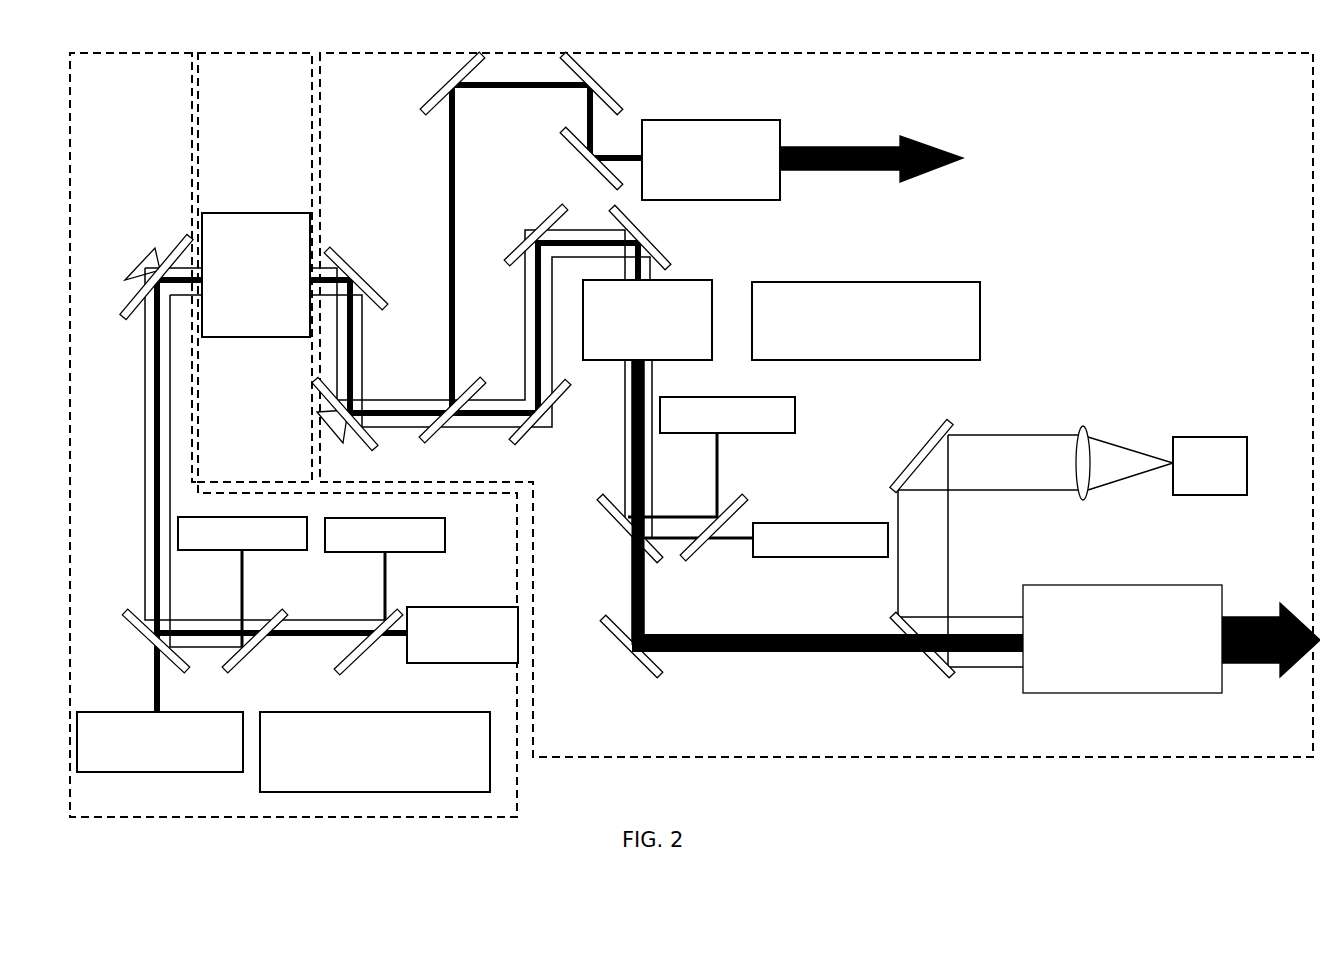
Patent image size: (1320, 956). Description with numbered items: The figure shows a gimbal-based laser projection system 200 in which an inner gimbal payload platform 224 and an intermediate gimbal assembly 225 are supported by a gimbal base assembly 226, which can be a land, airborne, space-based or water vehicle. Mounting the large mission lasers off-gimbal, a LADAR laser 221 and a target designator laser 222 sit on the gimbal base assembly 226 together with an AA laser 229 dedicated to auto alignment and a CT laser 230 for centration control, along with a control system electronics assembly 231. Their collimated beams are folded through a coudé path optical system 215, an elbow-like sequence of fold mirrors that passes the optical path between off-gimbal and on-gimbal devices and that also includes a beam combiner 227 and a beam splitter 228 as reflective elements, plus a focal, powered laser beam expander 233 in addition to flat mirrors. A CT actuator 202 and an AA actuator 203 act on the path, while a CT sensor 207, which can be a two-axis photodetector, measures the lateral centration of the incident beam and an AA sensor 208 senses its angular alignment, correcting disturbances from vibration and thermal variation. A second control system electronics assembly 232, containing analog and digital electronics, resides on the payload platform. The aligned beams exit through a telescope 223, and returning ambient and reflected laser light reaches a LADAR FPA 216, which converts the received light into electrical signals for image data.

The gimbal-based laser projection system 200 is at (868, 822).
The CT actuator 202 is at (141, 260).
The AA actuator 203 is at (338, 440).
The CT sensor 207 is at (828, 523).
The AA sensor 208 is at (762, 434).
The coudé path optical system 215 is at (250, 213).
The LADAR FPA 216 is at (1213, 437).
The LADAR laser 221 is at (427, 607).
The target designator laser 222 is at (128, 772).
The telescope 223 is at (1113, 694).
The inner gimbal payload platform 224 is at (345, 53).
The intermediate gimbal assembly 225 is at (210, 53).
The gimbal base assembly 226 is at (112, 53).
The beam combiner 227 is at (135, 628).
The beam splitter 228 is at (482, 383).
The AA laser 229 is at (253, 552).
The CT laser 230 is at (447, 545).
The control system electronics assembly 231 is at (357, 712).
The control system electronics assembly 232 is at (835, 282).
The laser beam expander 233 is at (693, 280).